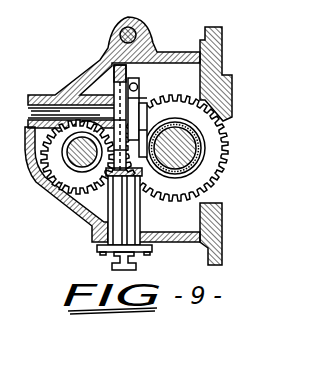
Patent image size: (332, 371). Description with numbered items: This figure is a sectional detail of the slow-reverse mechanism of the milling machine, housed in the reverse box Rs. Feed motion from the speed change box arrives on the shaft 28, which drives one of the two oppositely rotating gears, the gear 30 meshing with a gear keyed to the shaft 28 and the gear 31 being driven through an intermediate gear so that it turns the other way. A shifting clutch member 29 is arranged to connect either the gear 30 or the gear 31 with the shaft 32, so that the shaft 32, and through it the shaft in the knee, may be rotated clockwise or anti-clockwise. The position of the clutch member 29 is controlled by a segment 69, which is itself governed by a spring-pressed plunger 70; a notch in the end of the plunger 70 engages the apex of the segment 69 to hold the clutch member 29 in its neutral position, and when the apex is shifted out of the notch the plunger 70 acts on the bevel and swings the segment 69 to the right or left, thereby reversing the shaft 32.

The segment 69 is at (111, 68).
The shifting clutch member 29 is at (167, 130).
The gear 30 is at (226, 150).
The shaft 32 is at (190, 160).
The shaft 28 is at (72, 167).
The spring-pressed plunger 70 is at (113, 185).
The gear 31 is at (68, 182).
The reverse box Rs is at (86, 216).